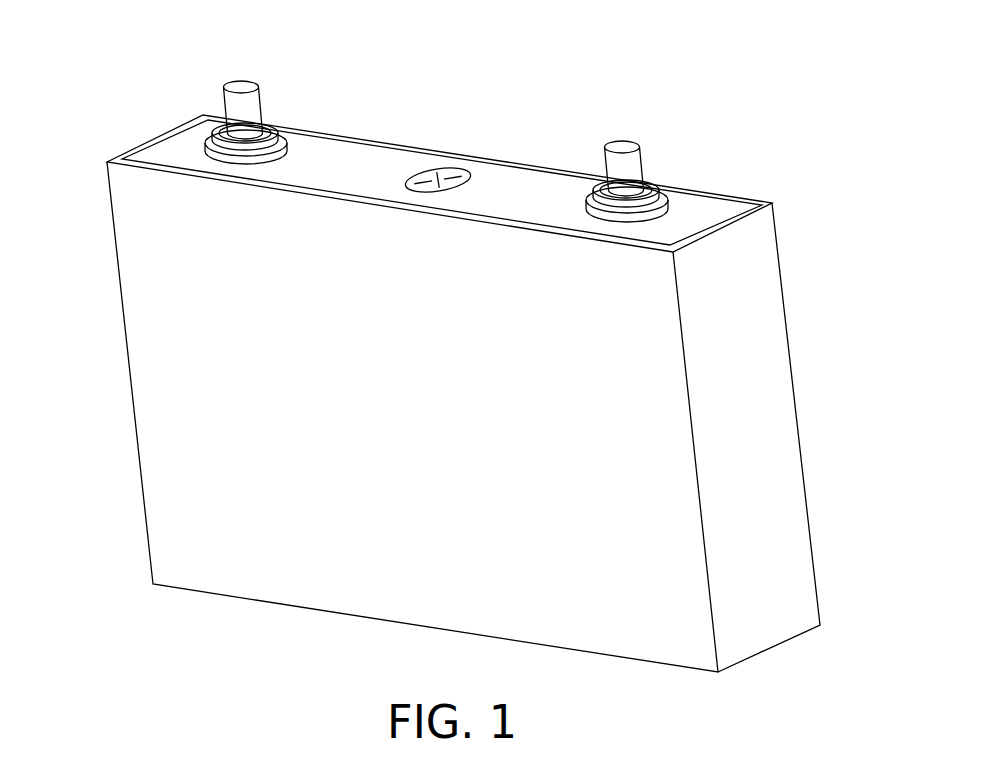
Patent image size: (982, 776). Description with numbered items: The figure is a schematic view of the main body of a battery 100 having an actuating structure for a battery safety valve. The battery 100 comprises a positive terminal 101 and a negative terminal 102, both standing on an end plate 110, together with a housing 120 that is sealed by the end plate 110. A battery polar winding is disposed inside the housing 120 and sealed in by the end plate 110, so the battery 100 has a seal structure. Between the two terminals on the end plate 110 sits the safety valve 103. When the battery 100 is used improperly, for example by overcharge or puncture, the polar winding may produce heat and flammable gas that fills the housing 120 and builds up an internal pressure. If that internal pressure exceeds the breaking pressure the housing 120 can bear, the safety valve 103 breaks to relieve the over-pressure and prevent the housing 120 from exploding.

The battery 100 is at (57, 43).
The positive terminal 101 is at (240, 82).
The negative terminal 102 is at (618, 147).
The safety valve 103 is at (437, 168).
The end plate 110 is at (695, 212).
The housing 120 is at (758, 453).